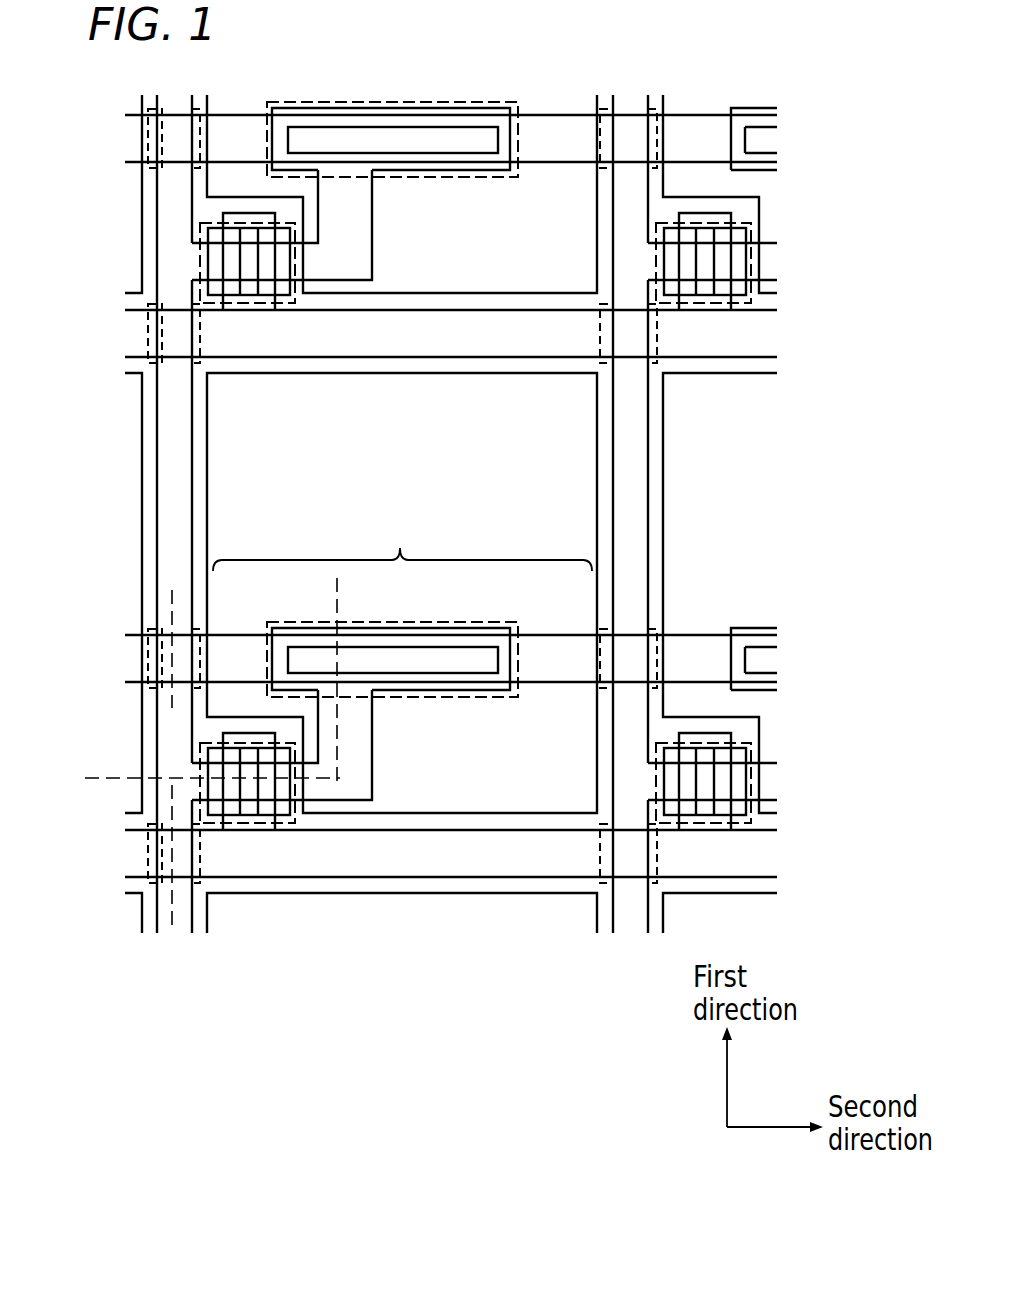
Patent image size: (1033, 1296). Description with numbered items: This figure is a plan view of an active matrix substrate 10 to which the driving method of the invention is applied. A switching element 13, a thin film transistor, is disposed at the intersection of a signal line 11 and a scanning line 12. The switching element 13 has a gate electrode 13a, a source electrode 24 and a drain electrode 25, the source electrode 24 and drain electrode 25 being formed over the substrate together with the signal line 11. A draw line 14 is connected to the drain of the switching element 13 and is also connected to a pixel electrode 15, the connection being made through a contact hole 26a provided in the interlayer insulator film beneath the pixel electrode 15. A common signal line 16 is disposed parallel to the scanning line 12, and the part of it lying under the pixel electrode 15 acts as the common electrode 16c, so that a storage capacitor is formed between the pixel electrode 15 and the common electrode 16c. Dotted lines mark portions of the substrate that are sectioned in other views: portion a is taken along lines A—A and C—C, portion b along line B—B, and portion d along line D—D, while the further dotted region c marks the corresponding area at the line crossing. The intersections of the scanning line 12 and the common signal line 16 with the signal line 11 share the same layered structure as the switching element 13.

The active matrix substrate 10 is at (396, 559).
The signal line 11 is at (155, 490).
The scanning line 12 is at (142, 360).
The switching element 13 is at (235, 836).
The gate electrode 13a is at (260, 820).
The draw line 14 is at (372, 790).
The pixel electrode 15 is at (532, 820).
The common signal line 16 is at (138, 635).
The common electrode 16c is at (402, 541).
The source electrode 24 is at (205, 832).
The drain electrode 25 is at (277, 820).
The contact hole 26a is at (430, 678).
The portion a is at (255, 817).
The portion b is at (484, 706).
The contact hole c is at (192, 637).
The portion d is at (148, 860).